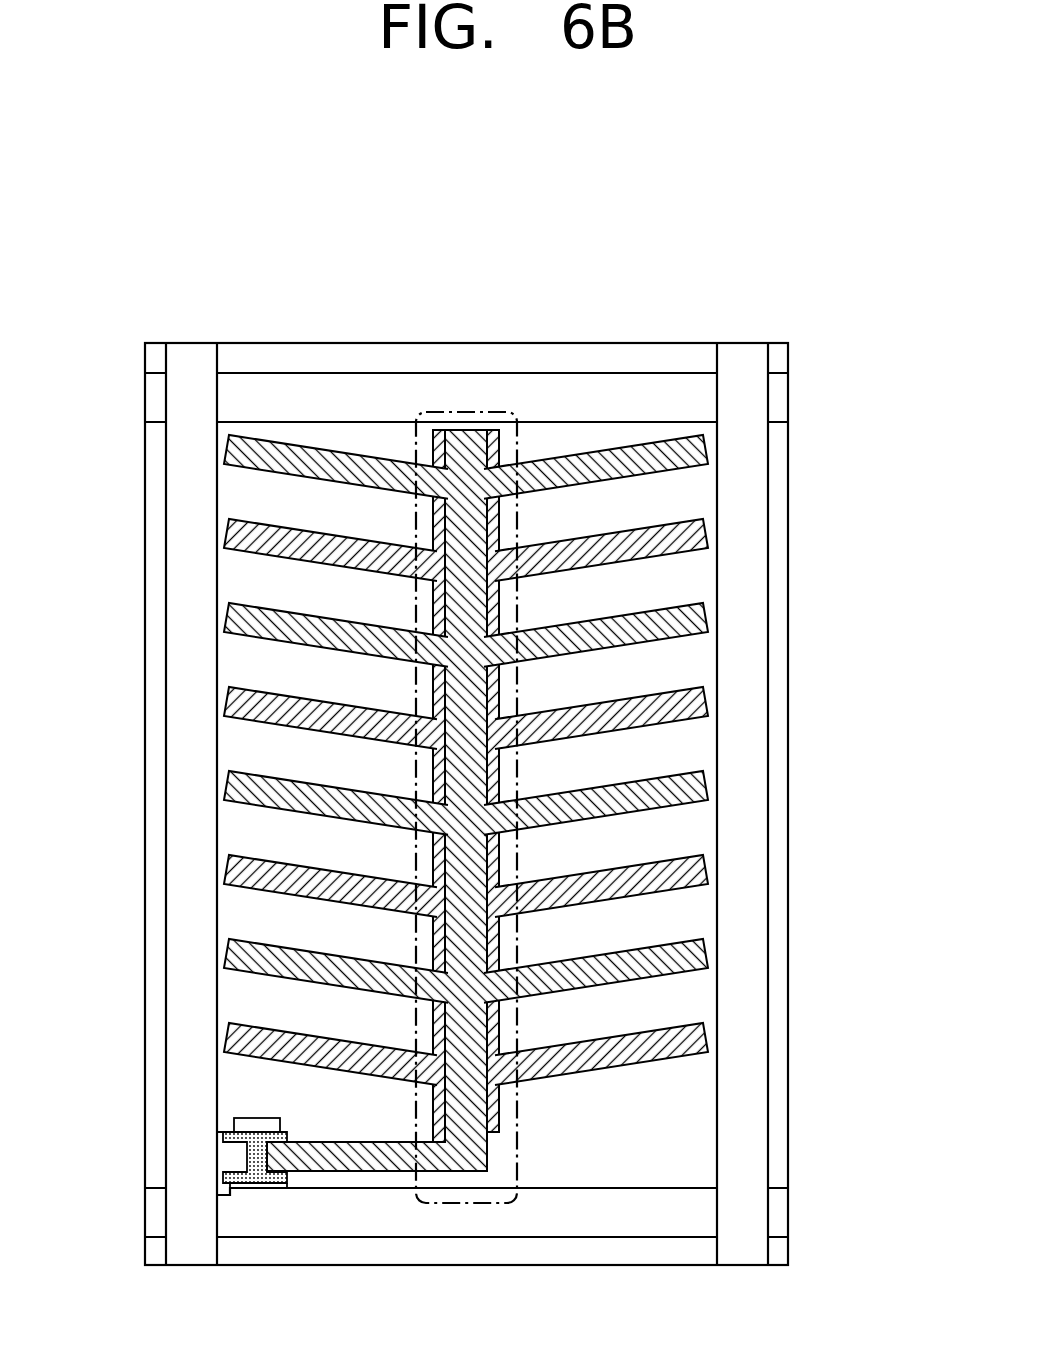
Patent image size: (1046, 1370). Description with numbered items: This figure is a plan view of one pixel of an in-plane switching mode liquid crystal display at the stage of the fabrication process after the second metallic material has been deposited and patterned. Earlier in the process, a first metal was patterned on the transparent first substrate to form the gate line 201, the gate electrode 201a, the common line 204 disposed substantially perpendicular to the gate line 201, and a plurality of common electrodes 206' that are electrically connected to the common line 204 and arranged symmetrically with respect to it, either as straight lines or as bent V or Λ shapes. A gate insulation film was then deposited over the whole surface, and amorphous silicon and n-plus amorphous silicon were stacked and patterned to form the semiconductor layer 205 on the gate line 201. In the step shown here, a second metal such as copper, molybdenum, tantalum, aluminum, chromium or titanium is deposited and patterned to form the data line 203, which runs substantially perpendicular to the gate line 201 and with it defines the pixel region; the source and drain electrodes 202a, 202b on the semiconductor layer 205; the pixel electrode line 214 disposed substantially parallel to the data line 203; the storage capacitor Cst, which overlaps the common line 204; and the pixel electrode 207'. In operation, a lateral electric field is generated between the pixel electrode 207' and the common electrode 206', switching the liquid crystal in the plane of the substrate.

The gate line 201 is at (383, 1228).
The gate electrode 201a is at (248, 1122).
The source electrode 202a is at (238, 1155).
The drain electrode 202b is at (277, 1183).
The data line 203 is at (189, 1257).
The common line 204 is at (502, 1108).
The semiconductor layer 205 is at (255, 1183).
The common electrode 206' is at (563, 802).
The pixel electrode 207' is at (563, 719).
The pixel electrode line 214 is at (465, 1175).
The storage capacitor Cst is at (471, 410).